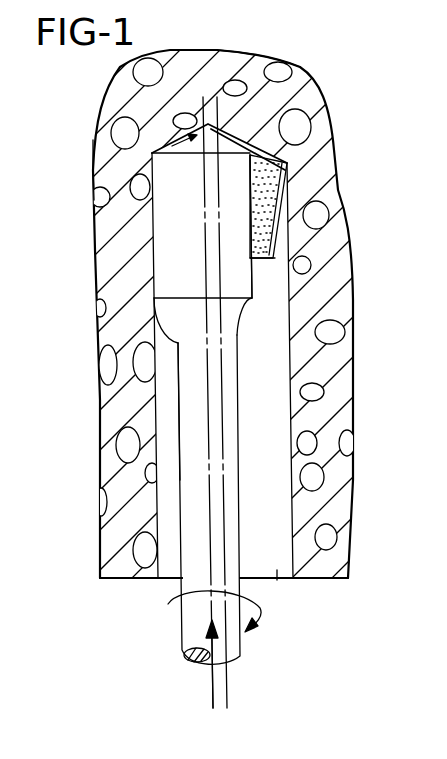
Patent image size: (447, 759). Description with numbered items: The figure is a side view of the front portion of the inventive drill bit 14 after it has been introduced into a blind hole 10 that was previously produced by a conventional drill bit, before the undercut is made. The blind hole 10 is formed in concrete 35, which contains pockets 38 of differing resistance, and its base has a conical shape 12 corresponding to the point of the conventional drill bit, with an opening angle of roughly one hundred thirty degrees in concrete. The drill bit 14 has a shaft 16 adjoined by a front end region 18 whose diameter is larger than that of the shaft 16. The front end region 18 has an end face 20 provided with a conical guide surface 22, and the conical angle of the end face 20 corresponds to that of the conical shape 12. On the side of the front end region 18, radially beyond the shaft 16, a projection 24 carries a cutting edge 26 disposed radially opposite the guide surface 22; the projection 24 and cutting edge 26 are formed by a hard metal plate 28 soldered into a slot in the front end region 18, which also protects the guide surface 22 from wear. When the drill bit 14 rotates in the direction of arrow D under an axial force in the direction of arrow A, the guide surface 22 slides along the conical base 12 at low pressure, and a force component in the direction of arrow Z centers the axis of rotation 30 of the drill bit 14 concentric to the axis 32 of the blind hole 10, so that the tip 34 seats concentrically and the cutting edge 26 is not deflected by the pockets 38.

The blind hole 10 is at (281, 585).
The conical shape of the blind hole base 12 is at (330, 112).
The drill bit 14 is at (170, 423).
The shaft 16 is at (183, 480).
The front end region 18 is at (143, 213).
The end face 20 is at (303, 73).
The conical guide surface 22 is at (108, 108).
The projection 24 is at (290, 213).
The cutting edge 26 is at (297, 237).
The hard metal plate 28 is at (281, 181).
The axis of rotation 30 is at (202, 345).
The axis of the blind hole 32 is at (222, 280).
The tip of the drill bit 34 is at (213, 53).
The concrete 35 is at (95, 153).
The pockets 38 is at (326, 384).
The arrow Z is at (188, 52).
The arrow D is at (168, 604).
The arrow A is at (182, 642).